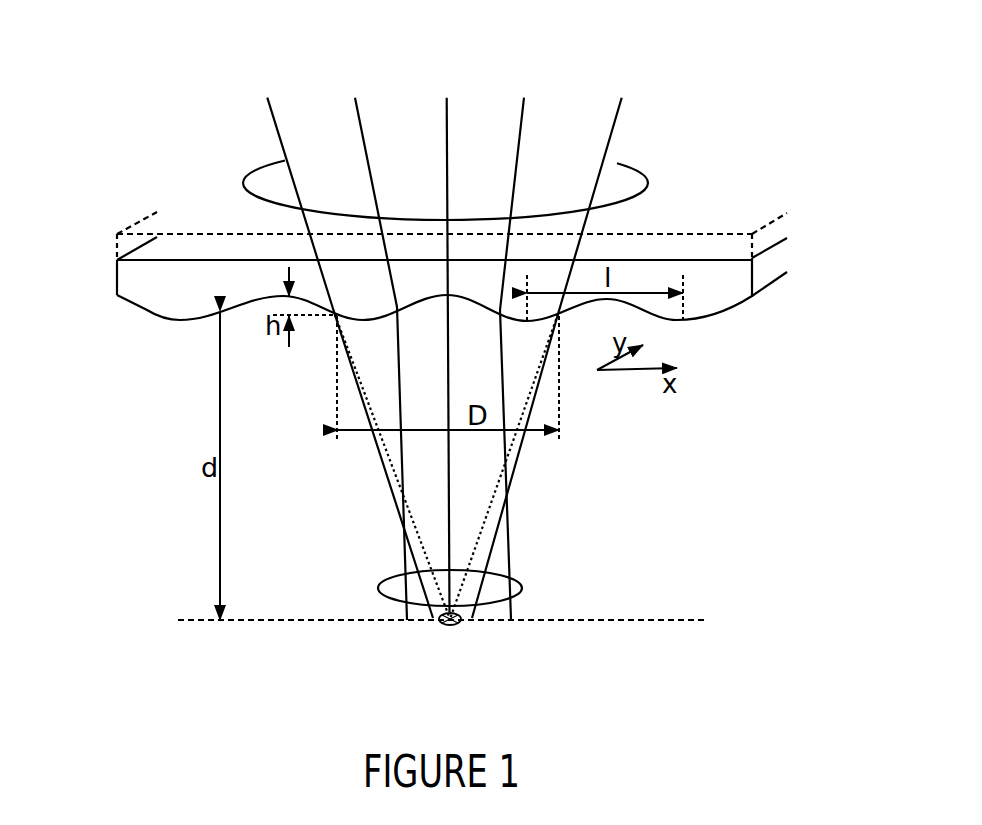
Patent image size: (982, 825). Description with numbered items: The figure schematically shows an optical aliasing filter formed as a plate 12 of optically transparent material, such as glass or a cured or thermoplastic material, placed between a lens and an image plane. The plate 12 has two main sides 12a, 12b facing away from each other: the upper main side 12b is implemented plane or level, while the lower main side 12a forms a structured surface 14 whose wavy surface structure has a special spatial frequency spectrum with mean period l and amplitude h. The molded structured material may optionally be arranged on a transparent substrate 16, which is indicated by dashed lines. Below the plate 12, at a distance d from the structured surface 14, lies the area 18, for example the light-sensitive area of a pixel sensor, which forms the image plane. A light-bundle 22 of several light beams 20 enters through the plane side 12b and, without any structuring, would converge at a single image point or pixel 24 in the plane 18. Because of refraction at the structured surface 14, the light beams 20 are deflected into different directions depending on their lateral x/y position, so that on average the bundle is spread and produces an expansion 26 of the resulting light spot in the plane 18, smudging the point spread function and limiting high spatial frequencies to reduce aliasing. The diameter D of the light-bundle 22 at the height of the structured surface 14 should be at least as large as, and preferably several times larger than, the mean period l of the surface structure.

The plate 12 is at (436, 255).
The main side 12a is at (152, 318).
The main side 12b is at (180, 190).
The structured surface 14 is at (722, 312).
The transparent substrate 16 is at (752, 245).
The area 18 is at (190, 620).
The light beams 20 is at (622, 107).
The light-bundle 22 is at (648, 182).
The image point 24 is at (451, 626).
The expansion 26 is at (522, 588).